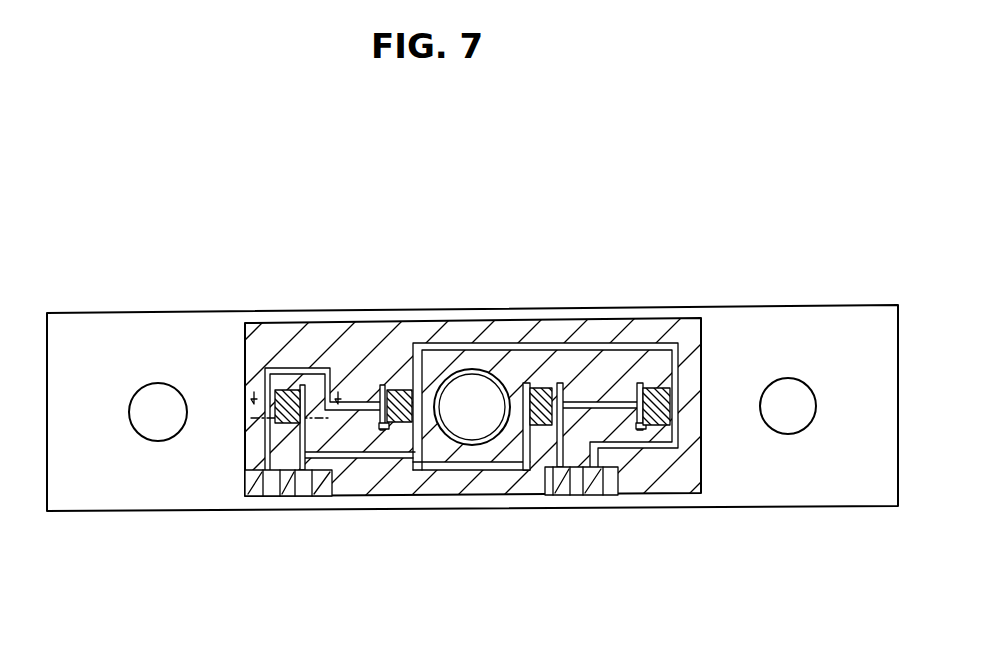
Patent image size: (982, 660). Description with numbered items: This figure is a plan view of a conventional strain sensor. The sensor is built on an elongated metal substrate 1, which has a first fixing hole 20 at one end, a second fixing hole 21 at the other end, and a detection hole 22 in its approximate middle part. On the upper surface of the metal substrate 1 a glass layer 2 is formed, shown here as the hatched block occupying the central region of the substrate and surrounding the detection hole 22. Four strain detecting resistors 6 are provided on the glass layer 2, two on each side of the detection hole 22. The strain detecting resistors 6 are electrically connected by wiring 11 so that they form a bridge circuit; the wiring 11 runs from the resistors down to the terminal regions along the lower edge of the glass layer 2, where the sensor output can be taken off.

The metal substrate 1 is at (166, 500).
The glass layer 2 is at (500, 321).
The strain detecting resistors 6 is at (396, 386).
The wiring 11 is at (303, 493).
The first fixing hole 20 is at (157, 383).
The second fixing hole 21 is at (795, 378).
The detection hole 22 is at (455, 375).